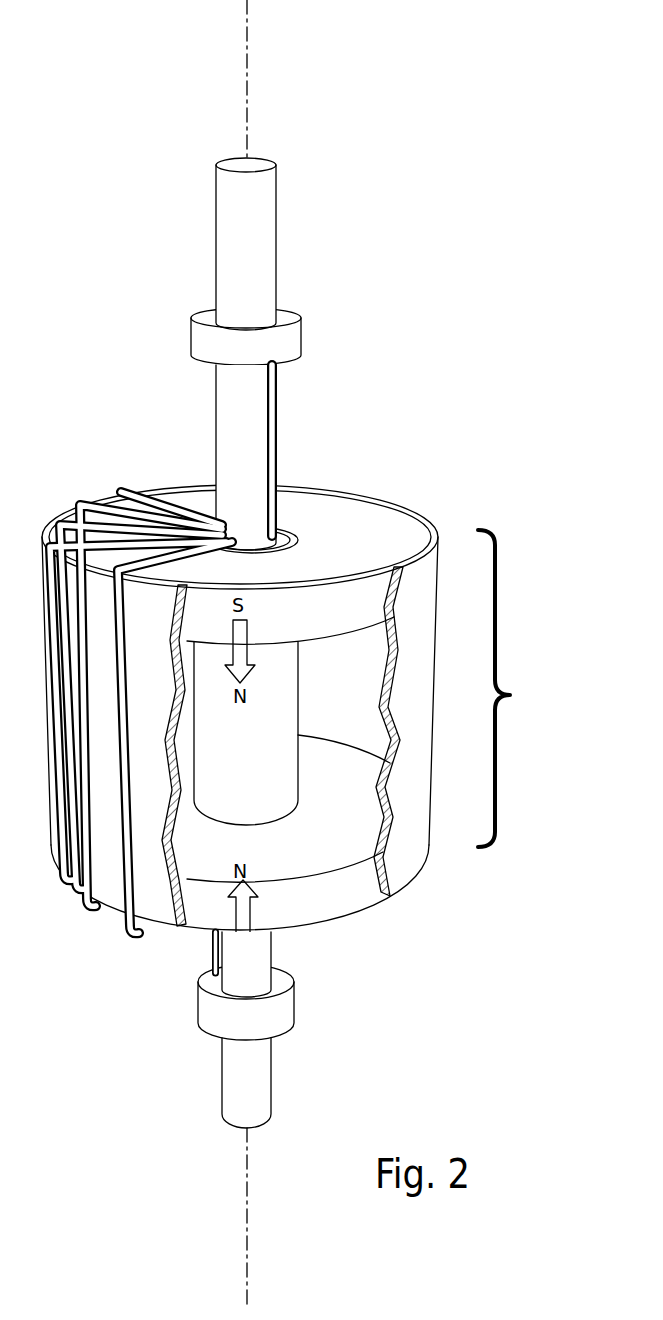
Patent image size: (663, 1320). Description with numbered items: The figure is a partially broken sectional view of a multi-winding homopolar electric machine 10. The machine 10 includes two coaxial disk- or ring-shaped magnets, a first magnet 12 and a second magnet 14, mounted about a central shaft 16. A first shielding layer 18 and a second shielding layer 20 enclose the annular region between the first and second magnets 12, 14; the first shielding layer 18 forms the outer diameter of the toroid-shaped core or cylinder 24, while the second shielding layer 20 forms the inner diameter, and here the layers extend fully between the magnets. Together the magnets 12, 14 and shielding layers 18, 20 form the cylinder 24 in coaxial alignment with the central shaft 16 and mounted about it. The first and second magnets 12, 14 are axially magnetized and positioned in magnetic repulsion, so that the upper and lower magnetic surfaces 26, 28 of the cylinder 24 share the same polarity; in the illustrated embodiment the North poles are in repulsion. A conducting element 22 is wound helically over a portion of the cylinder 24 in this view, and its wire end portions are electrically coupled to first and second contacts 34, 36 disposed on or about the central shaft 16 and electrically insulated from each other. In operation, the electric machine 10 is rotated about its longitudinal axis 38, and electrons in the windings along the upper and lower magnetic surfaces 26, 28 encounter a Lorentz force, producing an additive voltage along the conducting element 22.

The multi-winding homopolar electric machine 10 is at (432, 343).
The first magnet 12 is at (371, 519).
The second magnet 14 is at (325, 920).
The central shaft 16 is at (277, 231).
The first shielding layer 18 is at (415, 753).
The second shielding layer 20 is at (283, 711).
The conducting element 22 is at (275, 405).
The cylinder 24 is at (508, 688).
The upper magnetic surface 26 is at (322, 508).
The lower magnetic surface 28 is at (375, 905).
The first contact 34 is at (291, 348).
The second contact 36 is at (285, 1015).
The longitudinal axis 38 is at (247, 133).